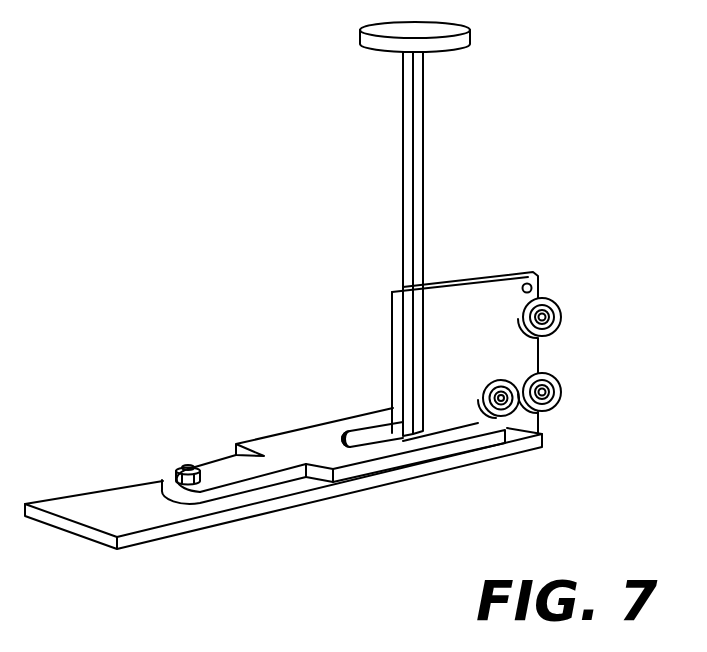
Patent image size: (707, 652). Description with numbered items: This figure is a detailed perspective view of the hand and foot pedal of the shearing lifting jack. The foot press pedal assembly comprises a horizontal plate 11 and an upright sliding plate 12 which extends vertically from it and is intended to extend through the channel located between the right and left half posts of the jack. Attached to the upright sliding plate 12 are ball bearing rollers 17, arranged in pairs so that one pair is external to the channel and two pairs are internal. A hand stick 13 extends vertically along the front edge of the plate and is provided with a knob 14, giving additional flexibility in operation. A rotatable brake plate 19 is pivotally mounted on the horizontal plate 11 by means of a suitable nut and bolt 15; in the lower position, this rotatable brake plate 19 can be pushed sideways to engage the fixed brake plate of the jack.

The horizontal plate 11 is at (130, 517).
The upright sliding plate 12 is at (460, 307).
The hand stick 13 is at (403, 121).
The knob 14 is at (368, 43).
The nut and bolt 15 is at (187, 465).
The ball bearing rollers 17 is at (560, 311).
The rotatable brake plate 19 is at (343, 456).